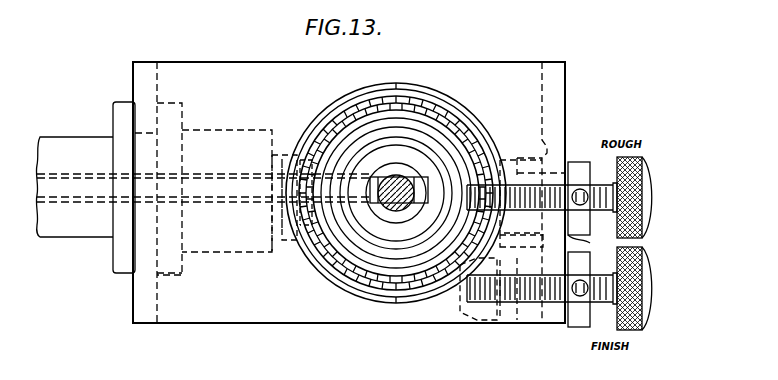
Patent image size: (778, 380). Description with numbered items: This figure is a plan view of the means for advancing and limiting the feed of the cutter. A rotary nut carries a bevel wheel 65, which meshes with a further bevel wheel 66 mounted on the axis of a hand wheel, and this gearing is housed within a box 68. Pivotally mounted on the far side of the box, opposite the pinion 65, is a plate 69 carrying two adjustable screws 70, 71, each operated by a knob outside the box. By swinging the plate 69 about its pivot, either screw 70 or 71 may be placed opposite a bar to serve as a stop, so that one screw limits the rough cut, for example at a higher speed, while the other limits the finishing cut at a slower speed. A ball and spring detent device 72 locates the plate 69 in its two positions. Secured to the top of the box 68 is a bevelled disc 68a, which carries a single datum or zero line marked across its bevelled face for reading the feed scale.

The bevel wheel 65 is at (290, 220).
The further bevel wheel 66 is at (332, 120).
The box 68 is at (550, 96).
The bevelled disc 68a is at (318, 267).
The plate 69 is at (524, 312).
The adjustable screw 70 is at (617, 315).
The adjustable screw 71 is at (617, 163).
The ball and spring detent device 72 is at (570, 241).